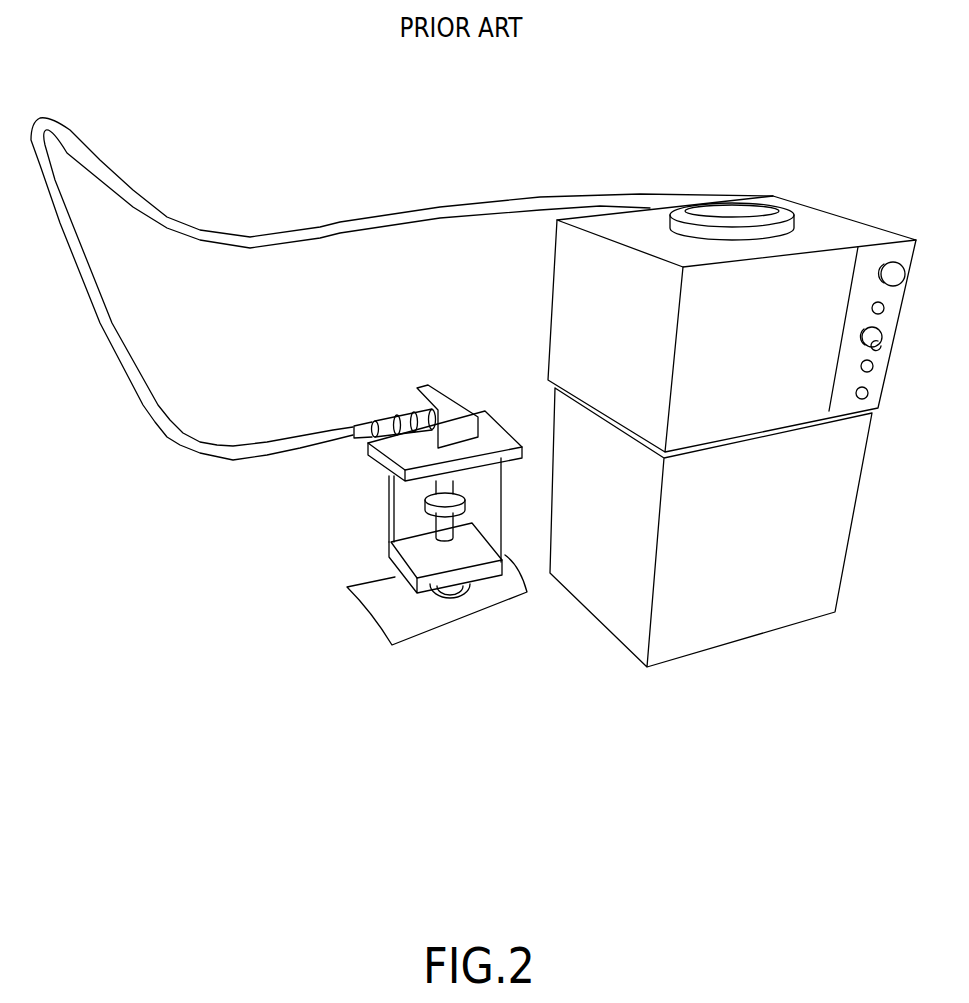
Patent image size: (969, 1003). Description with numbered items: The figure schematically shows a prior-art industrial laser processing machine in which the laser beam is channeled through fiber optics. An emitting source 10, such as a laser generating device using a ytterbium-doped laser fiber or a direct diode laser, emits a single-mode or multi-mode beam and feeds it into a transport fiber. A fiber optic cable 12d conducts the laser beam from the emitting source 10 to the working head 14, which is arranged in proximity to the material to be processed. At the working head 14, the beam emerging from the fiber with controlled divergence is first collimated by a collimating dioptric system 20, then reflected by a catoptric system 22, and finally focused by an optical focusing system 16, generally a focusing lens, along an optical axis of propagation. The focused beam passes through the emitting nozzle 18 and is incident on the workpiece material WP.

The emitting source 10 is at (826, 201).
The fiber optic cable 12d is at (407, 213).
The working head 14 is at (341, 502).
The optical focusing system 16 is at (420, 505).
The emitting nozzle 18 is at (463, 600).
The collimating dioptric system 20 is at (405, 413).
The catoptric system 22 is at (462, 410).
The material WP is at (403, 623).